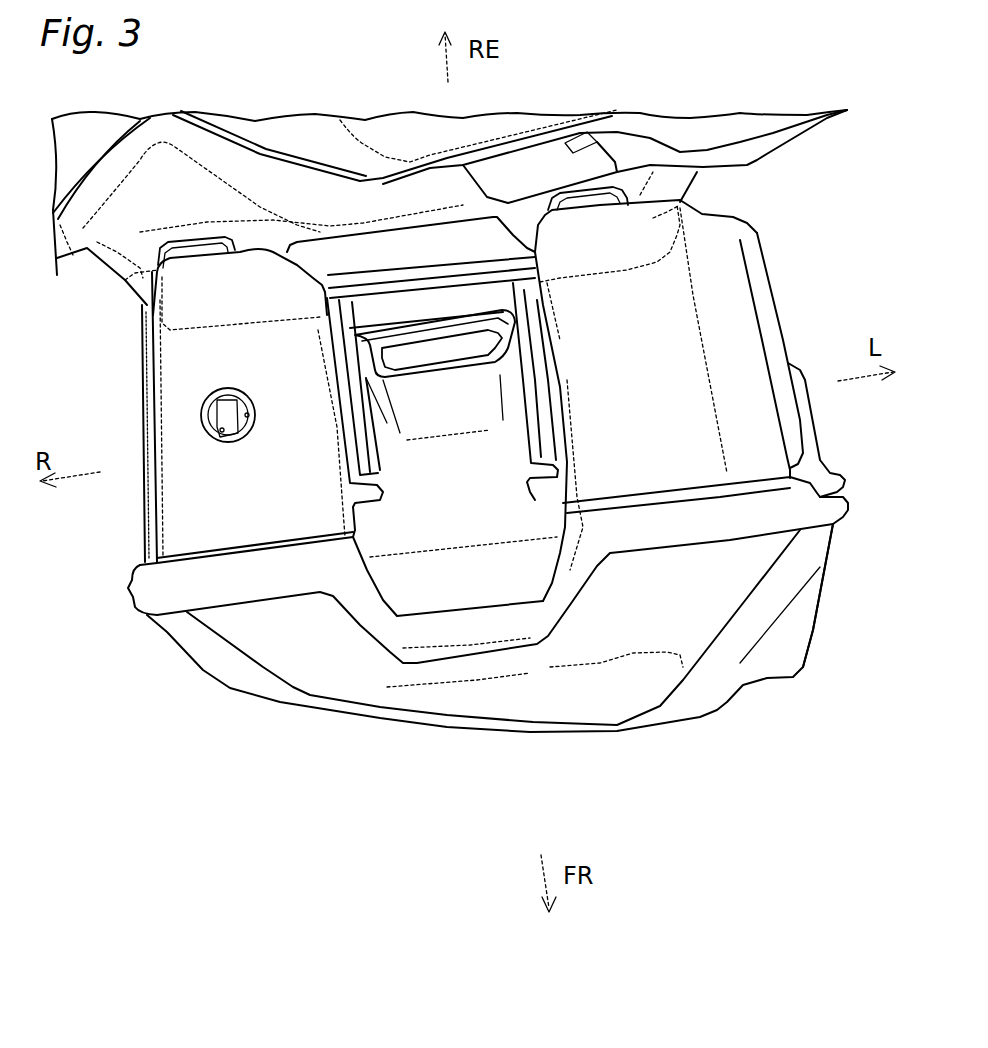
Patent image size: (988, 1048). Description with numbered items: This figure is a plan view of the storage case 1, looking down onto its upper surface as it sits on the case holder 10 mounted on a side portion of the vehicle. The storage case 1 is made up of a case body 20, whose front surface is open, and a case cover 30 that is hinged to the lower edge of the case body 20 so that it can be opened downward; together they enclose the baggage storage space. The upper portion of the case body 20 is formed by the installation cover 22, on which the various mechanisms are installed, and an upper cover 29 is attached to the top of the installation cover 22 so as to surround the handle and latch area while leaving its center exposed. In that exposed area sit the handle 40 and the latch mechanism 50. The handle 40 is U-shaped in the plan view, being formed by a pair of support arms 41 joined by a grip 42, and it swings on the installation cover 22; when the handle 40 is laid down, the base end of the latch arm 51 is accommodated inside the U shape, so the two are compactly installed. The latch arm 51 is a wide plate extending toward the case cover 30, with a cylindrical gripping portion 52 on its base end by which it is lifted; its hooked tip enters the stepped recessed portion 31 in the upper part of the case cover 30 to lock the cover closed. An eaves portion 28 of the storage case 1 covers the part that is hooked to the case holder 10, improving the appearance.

The storage case 1 is at (733, 725).
The case holder 10 is at (302, 177).
The case body 20 is at (477, 381).
The installation cover 22 is at (757, 238).
The eaves portion 28 is at (158, 280).
The upper cover 29 is at (740, 357).
The case cover 30 is at (488, 670).
The recessed portion 31 is at (517, 623).
The handle 40 is at (337, 338).
The support arms 41 is at (337, 382).
The grip 42 is at (423, 298).
The latch mechanism 50 is at (448, 544).
The latch arm 51 is at (497, 583).
The gripping portion 52 is at (520, 330).